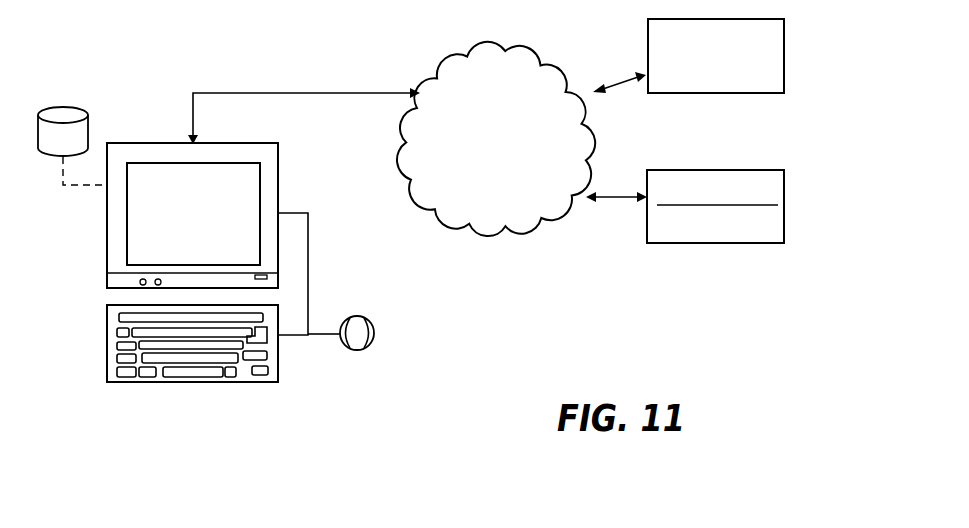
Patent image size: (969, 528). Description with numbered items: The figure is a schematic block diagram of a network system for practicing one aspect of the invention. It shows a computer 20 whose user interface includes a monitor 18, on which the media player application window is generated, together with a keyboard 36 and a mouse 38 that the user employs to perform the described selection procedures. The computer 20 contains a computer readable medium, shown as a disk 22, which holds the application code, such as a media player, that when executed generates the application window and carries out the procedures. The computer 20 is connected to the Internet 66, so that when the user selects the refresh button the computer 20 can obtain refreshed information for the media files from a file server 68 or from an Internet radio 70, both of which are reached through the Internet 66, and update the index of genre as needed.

The monitor 18 is at (247, 195).
The computer 20 is at (88, 306).
The disk 22 is at (75, 133).
The keyboard 36 is at (280, 365).
The mouse 38 is at (374, 333).
The Internet 66 is at (527, 215).
The file server 68 is at (785, 55).
The Internet radio 70 is at (785, 207).